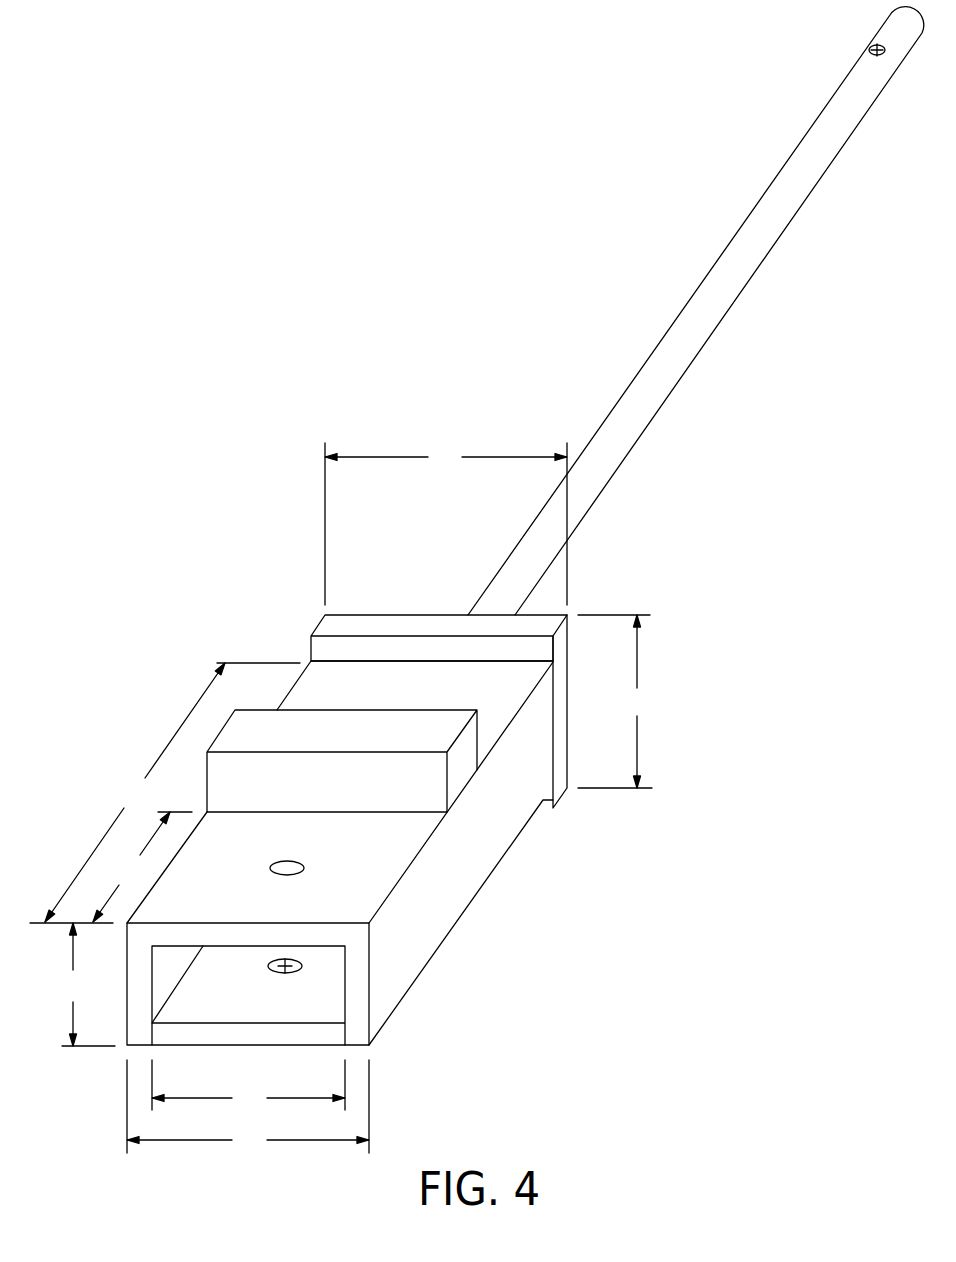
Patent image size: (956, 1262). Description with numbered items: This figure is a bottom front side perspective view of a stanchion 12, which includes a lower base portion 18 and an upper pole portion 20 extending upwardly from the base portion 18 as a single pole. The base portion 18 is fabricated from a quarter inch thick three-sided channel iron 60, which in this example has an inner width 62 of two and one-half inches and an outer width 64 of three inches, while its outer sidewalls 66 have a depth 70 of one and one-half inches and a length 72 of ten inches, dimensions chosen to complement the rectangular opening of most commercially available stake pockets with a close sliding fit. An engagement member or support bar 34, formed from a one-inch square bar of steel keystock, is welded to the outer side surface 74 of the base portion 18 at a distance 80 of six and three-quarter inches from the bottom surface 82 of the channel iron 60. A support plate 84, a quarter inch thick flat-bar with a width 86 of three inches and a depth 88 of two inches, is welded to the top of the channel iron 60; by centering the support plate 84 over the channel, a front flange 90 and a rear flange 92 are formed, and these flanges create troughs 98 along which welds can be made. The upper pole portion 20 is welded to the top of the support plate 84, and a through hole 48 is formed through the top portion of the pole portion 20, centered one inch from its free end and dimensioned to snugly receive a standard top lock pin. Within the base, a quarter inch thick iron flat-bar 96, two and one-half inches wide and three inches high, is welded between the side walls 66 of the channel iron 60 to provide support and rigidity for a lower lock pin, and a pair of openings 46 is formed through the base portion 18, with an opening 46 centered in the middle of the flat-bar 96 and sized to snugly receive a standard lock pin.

The stanchion 12 is at (264, 476).
The lower base portion 18 is at (410, 1039).
The upper pole portion 20 is at (677, 340).
The support bar 34 is at (303, 788).
The openings 46 is at (290, 866).
The through hole 48 is at (875, 46).
The channel iron 60 is at (422, 942).
The inner width 62 is at (248, 1087).
The outer width 64 is at (248, 1108).
The outer sidewalls 66 is at (460, 872).
The depth 70 is at (72, 984).
The length 72 is at (172, 792).
The outer side surface 74 is at (276, 913).
The distance 80 is at (142, 867).
The bottom surface 82 is at (357, 1018).
The support plate 84 is at (438, 645).
The width 86 is at (446, 523).
The depth 88 is at (615, 701).
The front flange 90 is at (328, 646).
The rear flange 92 is at (547, 803).
The flat-bar 96 is at (243, 1008).
The troughs 98 is at (513, 663).